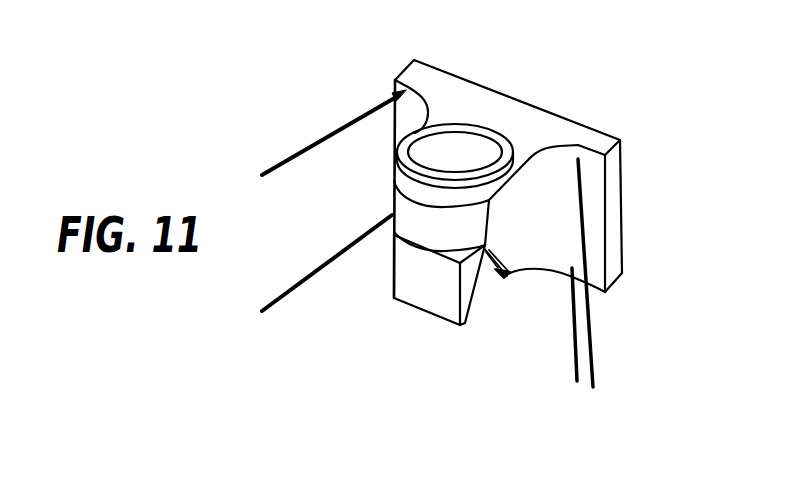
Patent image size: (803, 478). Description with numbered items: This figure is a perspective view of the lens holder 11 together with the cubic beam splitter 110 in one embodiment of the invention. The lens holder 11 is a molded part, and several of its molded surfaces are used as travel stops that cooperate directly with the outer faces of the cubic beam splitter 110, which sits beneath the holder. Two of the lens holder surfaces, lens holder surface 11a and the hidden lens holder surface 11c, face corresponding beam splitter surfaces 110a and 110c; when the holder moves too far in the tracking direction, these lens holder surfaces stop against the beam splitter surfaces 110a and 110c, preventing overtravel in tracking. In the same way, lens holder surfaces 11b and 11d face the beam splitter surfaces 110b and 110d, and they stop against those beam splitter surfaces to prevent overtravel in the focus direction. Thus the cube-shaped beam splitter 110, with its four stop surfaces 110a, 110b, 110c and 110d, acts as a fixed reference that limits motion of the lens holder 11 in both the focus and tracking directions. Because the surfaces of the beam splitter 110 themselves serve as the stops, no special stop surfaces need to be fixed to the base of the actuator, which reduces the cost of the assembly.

The lens holder 11 is at (570, 200).
The lens holder surface 11a is at (506, 274).
The lens holder surface 11b is at (492, 279).
The lens holder surface 11c is at (378, 238).
The lens holder surface 11d is at (411, 247).
The cubic beam splitter 110 is at (420, 278).
The beam splitter surface 110a is at (462, 311).
The beam splitter surface 110b is at (453, 318).
The beam splitter surface 110c is at (392, 283).
The beam splitter surface 110d is at (395, 231).